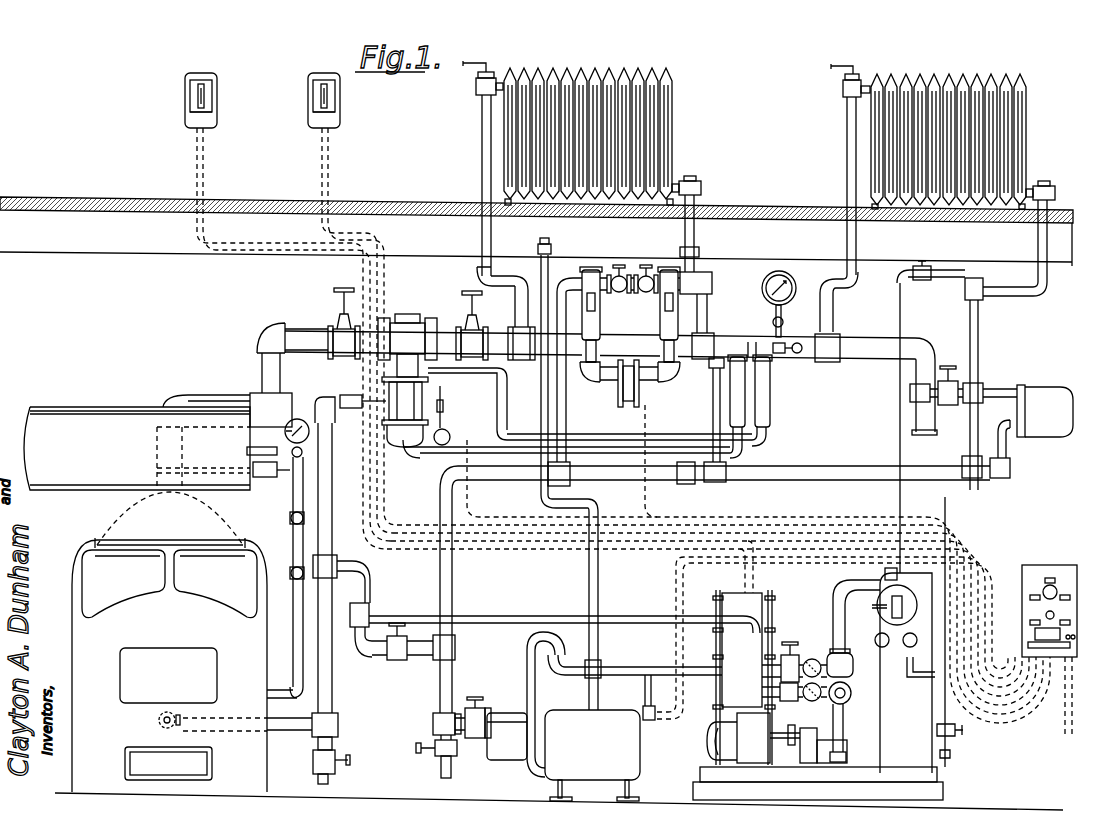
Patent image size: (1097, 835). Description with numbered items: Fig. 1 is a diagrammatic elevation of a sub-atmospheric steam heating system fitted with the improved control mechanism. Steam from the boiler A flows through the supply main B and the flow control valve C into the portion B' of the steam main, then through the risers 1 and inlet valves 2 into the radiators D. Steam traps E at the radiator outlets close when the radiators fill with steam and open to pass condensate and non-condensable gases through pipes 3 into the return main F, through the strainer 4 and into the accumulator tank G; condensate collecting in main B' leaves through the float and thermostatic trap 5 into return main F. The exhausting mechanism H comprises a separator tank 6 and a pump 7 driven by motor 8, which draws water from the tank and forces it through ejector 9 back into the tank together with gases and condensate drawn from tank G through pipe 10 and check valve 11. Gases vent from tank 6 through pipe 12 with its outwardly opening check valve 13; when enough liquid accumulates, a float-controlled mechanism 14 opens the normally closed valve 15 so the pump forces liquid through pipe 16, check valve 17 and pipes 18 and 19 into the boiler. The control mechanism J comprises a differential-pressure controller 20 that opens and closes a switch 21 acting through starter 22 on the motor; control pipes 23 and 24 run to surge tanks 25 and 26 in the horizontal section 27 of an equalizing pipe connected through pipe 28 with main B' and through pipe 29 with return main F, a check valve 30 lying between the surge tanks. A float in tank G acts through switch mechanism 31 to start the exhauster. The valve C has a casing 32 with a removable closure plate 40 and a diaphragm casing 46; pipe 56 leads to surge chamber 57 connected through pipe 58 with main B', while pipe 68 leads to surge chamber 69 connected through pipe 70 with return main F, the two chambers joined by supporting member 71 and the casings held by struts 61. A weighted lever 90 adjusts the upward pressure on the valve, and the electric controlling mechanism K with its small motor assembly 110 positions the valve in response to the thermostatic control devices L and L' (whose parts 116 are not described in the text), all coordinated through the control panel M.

The boiler A is at (84, 532).
The supply main B is at (273, 375).
The portion of steam main B' is at (630, 379).
The flow control valve C is at (418, 328).
The radiator D is at (612, 71).
The steam trap E is at (701, 187).
The return main F is at (830, 478).
The accumulator tank G is at (567, 707).
The exhausting mechanism H is at (833, 622).
The differential pressure controller J is at (617, 397).
The electric controlling mechanism K is at (443, 433).
The thermostatic control device L is at (182, 100).
The thermostatic control device L' is at (306, 100).
The control panel M is at (1033, 566).
The riser 1 is at (481, 161).
The inlet valve 2 is at (475, 86).
The pipe 3 is at (696, 229).
The strainer 4 is at (496, 748).
The float and thermostatic trap 5 is at (1056, 396).
The separator tank 6 is at (924, 591).
The pump 7 is at (832, 723).
The motor 8 is at (718, 752).
The ejector 9 is at (832, 657).
The pipe 10 is at (633, 667).
The check valve 11 is at (808, 658).
The pipe 12 is at (901, 491).
The check valve 13 is at (924, 282).
The float-controlled mechanism 14 is at (884, 596).
The valve 15 is at (852, 695).
The pipe 16 is at (633, 618).
The check valve 17 is at (810, 696).
The pipe 18 is at (331, 660).
The pipe 19 is at (300, 731).
The differential-pressure controller 20 is at (631, 408).
The switch 21 is at (652, 400).
The starter 22 is at (722, 688).
The control pipe 23 is at (588, 380).
The control pipe 24 is at (668, 383).
The surge tank 25 is at (604, 308).
The surge tank 26 is at (662, 316).
The horizontal section of equalizing pipe 27 is at (650, 275).
The pipe 28 is at (708, 300).
The pipe 29 is at (592, 396).
The check valve 30 is at (618, 275).
The switch mechanism 31 is at (655, 700).
The casing 32 is at (467, 318).
The removable closure plate 40 is at (399, 317).
The upper diaphragm casing member 46 is at (382, 380).
The pipe 56 is at (497, 391).
The surge chamber 57 is at (772, 413).
The pipe 58 is at (795, 353).
The strut 61 is at (433, 407).
The pipe 68 is at (432, 457).
The surge chamber 69 is at (740, 401).
The pipe 70 is at (714, 413).
The supporting member 71 is at (750, 357).
The lever 90 is at (362, 412).
The motor assembly 110 is at (451, 436).
The thermostat element 116 is at (215, 80).